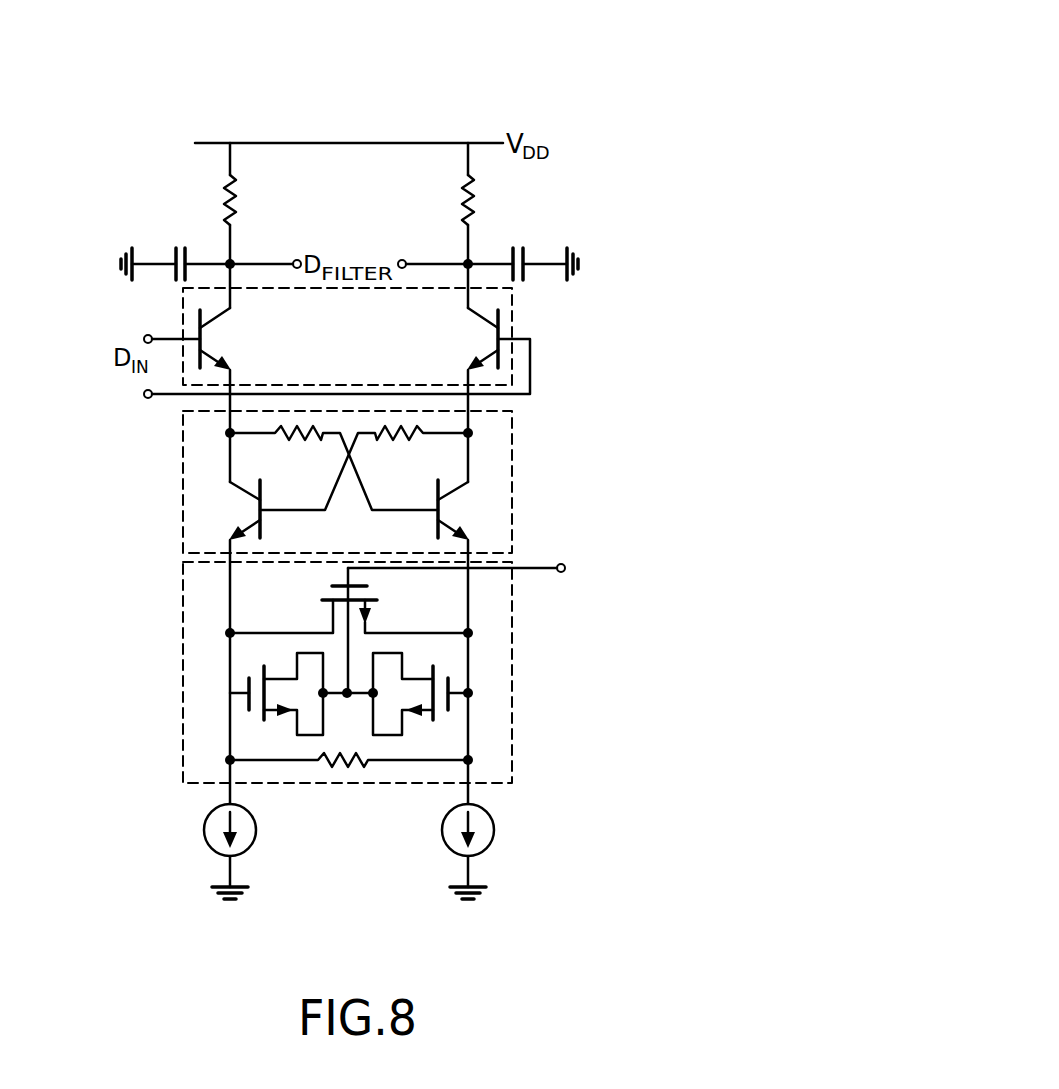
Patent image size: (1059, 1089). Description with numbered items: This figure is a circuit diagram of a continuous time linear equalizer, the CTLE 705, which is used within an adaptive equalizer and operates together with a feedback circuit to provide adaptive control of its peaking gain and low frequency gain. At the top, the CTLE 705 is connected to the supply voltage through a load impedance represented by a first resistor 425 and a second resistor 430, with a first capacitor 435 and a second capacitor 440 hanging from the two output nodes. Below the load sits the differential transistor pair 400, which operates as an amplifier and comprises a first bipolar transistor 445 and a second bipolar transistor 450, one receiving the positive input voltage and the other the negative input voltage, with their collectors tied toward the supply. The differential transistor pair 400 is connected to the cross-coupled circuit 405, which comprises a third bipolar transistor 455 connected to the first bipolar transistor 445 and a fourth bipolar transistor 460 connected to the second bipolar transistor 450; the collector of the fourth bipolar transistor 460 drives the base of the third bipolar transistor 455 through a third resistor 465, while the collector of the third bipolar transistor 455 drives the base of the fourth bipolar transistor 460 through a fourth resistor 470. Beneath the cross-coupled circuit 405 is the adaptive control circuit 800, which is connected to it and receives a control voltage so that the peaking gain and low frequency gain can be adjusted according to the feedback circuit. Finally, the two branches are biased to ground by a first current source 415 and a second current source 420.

The CTLE 705 is at (612, 108).
The first resistor 425 is at (243, 200).
The second resistor 430 is at (480, 194).
The first capacitor 435 is at (174, 252).
The second capacitor 440 is at (525, 255).
The differential transistor pair 400 is at (513, 309).
The first bipolar transistor 445 is at (230, 317).
The second bipolar transistor 450 is at (476, 318).
The cross-coupled circuit 405 is at (513, 446).
The third bipolar transistor 455 is at (237, 490).
The fourth bipolar transistor 460 is at (463, 490).
The third resistor 465 is at (403, 442).
The fourth resistor 470 is at (296, 442).
The adaptive control circuit 800 is at (513, 681).
The first current source 415 is at (256, 828).
The second current source 420 is at (494, 828).